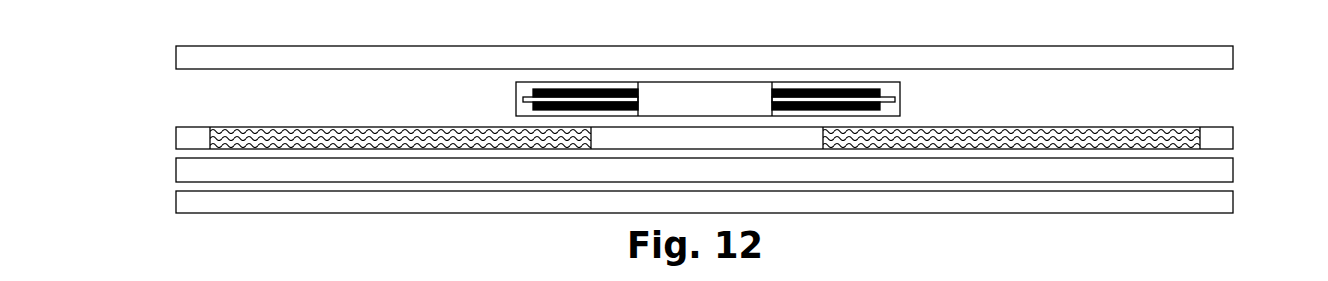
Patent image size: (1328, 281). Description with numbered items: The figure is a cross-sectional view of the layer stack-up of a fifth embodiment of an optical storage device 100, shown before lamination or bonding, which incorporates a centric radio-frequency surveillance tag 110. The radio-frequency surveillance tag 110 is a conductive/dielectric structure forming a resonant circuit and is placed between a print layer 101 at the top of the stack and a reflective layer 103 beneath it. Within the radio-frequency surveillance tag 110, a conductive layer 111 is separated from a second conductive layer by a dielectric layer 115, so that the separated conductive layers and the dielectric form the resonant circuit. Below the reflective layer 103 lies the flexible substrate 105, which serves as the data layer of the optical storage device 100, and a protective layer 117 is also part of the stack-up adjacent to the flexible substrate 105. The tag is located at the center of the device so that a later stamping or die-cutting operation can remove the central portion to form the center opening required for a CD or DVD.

The optical storage device 100 is at (880, 252).
The print layer 101 is at (1233, 61).
The reflective layer 103 is at (1233, 137).
The flexible substrate 105 is at (1233, 171).
The radio-frequency surveillance tag 110 is at (691, 96).
The conductive layer 111 is at (547, 89).
The dielectric layer 115 is at (525, 98).
The protective layer 117 is at (548, 110).